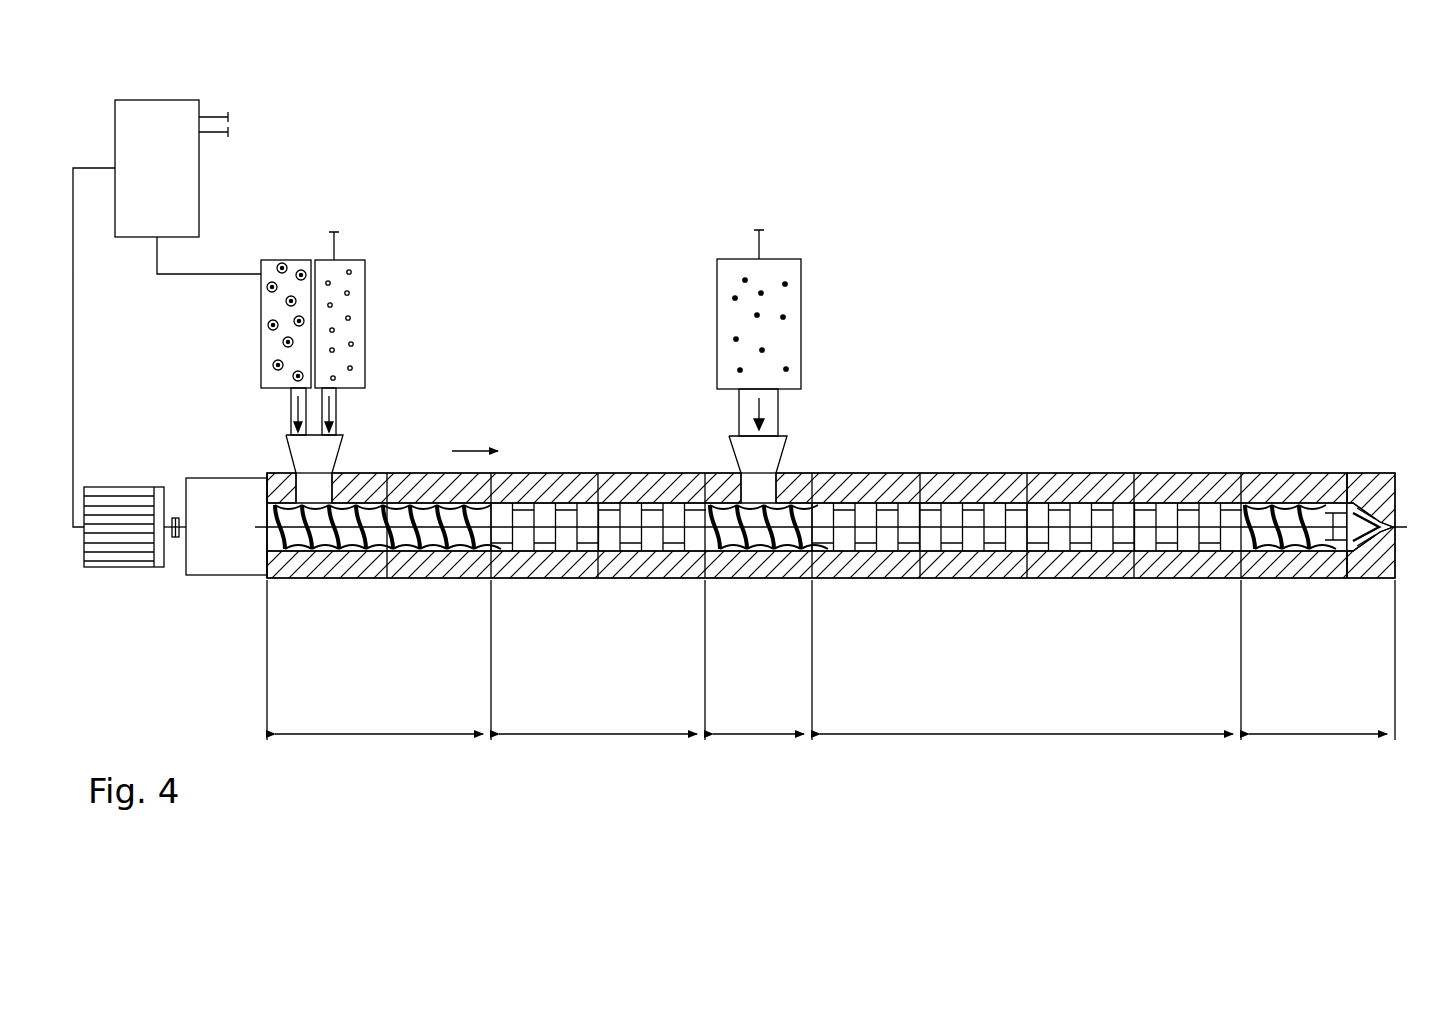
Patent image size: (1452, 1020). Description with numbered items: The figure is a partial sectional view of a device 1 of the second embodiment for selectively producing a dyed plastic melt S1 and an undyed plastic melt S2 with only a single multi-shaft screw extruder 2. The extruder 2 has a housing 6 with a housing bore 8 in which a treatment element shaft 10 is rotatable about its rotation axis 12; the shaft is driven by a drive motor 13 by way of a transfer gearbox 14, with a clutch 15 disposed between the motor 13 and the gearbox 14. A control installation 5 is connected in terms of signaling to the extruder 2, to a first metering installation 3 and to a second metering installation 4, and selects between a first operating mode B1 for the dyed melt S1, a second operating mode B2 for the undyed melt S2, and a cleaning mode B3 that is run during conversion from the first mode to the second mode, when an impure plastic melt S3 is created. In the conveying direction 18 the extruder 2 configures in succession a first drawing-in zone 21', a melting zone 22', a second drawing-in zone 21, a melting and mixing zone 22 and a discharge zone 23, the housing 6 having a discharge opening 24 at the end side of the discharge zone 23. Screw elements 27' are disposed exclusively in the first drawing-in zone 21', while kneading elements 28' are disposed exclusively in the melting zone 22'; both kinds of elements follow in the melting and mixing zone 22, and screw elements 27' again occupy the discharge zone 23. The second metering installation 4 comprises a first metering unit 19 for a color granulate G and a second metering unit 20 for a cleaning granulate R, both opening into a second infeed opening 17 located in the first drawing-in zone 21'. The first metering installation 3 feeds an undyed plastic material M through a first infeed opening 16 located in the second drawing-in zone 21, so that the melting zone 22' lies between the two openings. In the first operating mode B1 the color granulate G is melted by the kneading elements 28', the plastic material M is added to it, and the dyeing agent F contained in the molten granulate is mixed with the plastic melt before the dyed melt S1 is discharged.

The device 1 is at (889, 166).
The multi-shaft screw extruder 2 is at (1158, 470).
The first metering installation 3 is at (760, 293).
The second metering installation 4 is at (347, 251).
The control installation 5 is at (186, 313).
The housing 6 is at (872, 470).
The housing bore 8 is at (1040, 505).
The treatment element shaft 10 is at (549, 500).
The rotation axis 12 is at (1267, 505).
The drive motor 13 is at (108, 487).
The transfer gearbox 14 is at (237, 492).
The clutch 15 is at (175, 518).
The first infeed opening 16 is at (778, 472).
The second infeed opening 17 is at (333, 472).
The conveying direction 18 is at (472, 450).
The first metering unit 19 is at (261, 292).
The second metering unit 20 is at (397, 292).
The second drawing-in zone 21 is at (762, 660).
The first drawing-in zone 21' is at (379, 660).
The melting and mixing zone 22 is at (1030, 660).
The melting zone 22' is at (602, 660).
The discharge zone 23 is at (1322, 660).
The discharge opening 24 is at (1397, 527).
The screw element 27' is at (805, 521).
The kneading element 28' is at (866, 521).
The undyed plastic material M is at (745, 277).
The color granulate G is at (269, 323).
The dyeing agent F is at (269, 327).
The cleaning granulate R is at (357, 344).
The first operating mode B1 is at (155, 134).
The second operating mode B2 is at (155, 169).
The cleaning mode B3 is at (155, 204).
The dyed plastic melt S1 is at (1426, 554).
The undyed plastic melt S2 is at (1426, 582).
The impure plastic melt S3 is at (1421, 610).